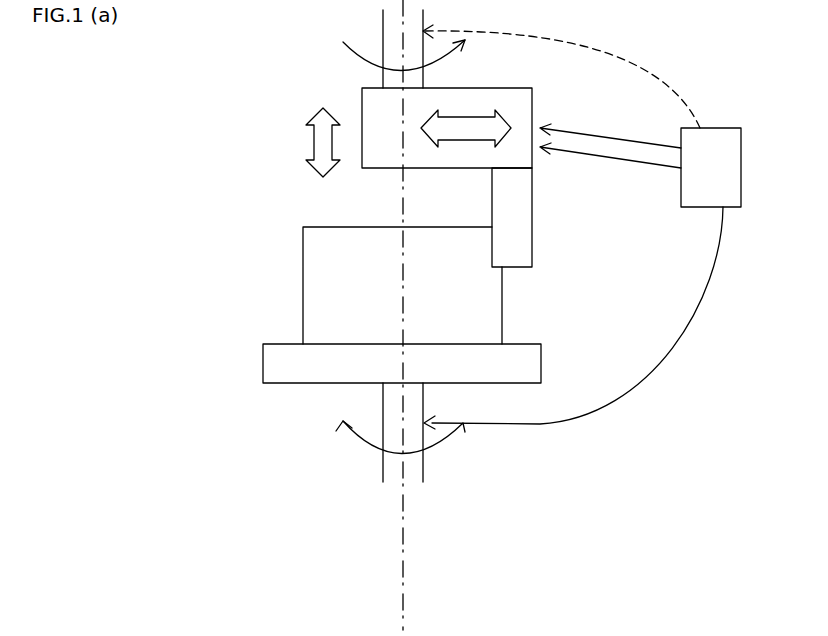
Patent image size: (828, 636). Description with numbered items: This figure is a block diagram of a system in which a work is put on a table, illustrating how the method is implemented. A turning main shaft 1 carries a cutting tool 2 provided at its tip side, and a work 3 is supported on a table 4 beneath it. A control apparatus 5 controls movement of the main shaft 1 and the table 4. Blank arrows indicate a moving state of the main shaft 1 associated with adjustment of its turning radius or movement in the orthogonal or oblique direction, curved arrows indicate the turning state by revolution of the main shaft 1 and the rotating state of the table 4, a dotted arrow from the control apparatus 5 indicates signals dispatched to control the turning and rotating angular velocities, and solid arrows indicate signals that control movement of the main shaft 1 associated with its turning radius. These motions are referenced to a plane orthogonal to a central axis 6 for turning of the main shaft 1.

The main shaft 1 is at (533, 104).
The cutting tool 2 is at (532, 225).
The work 3 is at (330, 306).
The table 4 is at (292, 375).
The control apparatus 5 is at (706, 182).
The central axis 6 is at (412, 470).